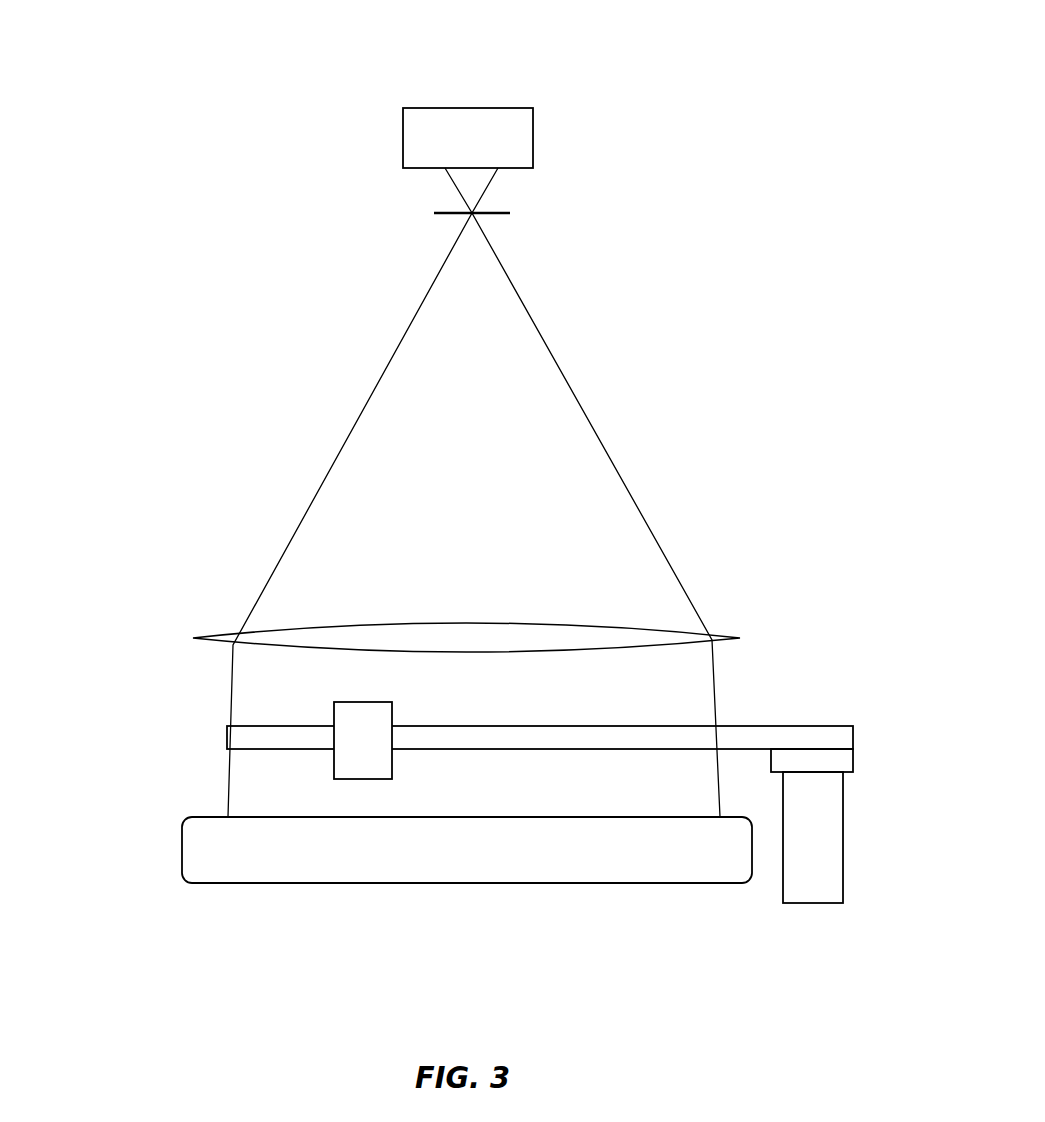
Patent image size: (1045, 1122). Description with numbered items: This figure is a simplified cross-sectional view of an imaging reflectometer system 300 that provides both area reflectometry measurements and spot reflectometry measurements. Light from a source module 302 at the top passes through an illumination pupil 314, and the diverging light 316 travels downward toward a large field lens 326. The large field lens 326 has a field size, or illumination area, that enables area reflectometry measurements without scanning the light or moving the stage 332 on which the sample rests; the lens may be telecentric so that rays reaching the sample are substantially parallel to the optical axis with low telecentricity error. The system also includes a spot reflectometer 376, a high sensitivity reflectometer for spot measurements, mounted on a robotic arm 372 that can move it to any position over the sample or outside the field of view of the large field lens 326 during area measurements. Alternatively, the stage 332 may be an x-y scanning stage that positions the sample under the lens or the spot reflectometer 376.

The imaging reflectometer system 300 is at (292, 90).
The source module 302 is at (533, 138).
The illumination pupil 314 is at (510, 213).
The laser beam 316 is at (567, 380).
The large field lens 326 is at (740, 638).
The stage 332 is at (182, 845).
The robotic arm 372 is at (796, 726).
The spot reflectometer 376 is at (364, 702).